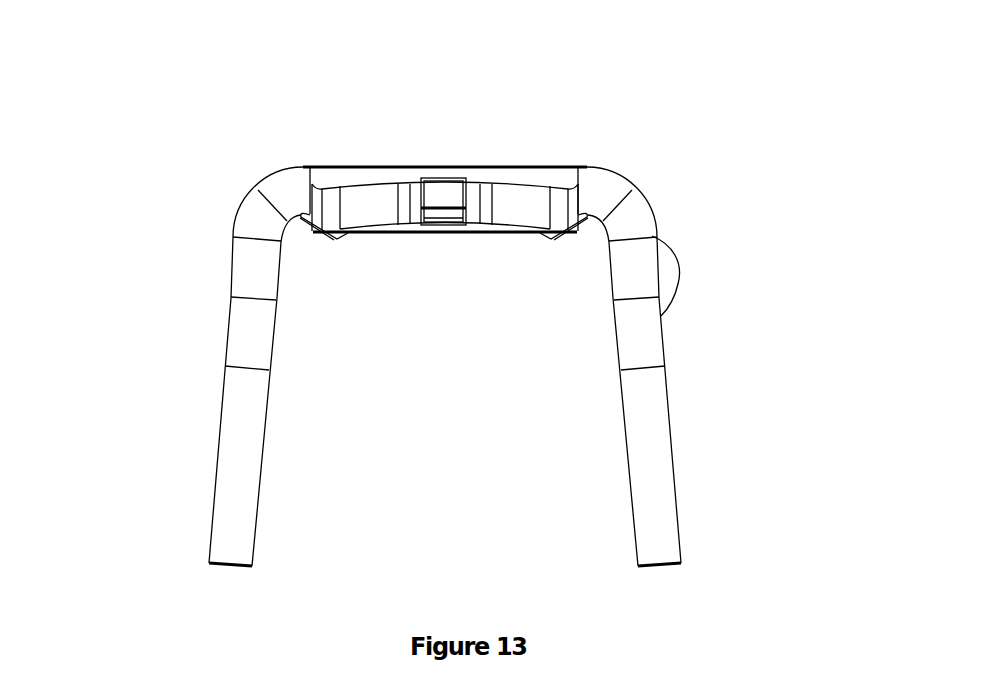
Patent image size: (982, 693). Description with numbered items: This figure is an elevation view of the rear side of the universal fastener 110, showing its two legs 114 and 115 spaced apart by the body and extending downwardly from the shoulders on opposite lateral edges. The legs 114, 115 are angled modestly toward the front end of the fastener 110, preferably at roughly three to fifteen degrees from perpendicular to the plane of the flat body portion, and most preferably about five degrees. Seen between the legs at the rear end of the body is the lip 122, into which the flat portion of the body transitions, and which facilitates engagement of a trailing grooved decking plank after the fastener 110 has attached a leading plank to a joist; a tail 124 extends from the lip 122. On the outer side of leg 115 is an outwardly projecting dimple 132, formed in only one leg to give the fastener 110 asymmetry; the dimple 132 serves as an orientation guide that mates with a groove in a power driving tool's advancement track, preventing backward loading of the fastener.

The universal fastener 110 is at (458, 319).
The leg 114 is at (240, 463).
The leg 115 is at (653, 477).
The lip 122 is at (517, 207).
The tail 124 is at (446, 206).
The dimple 132 is at (677, 268).